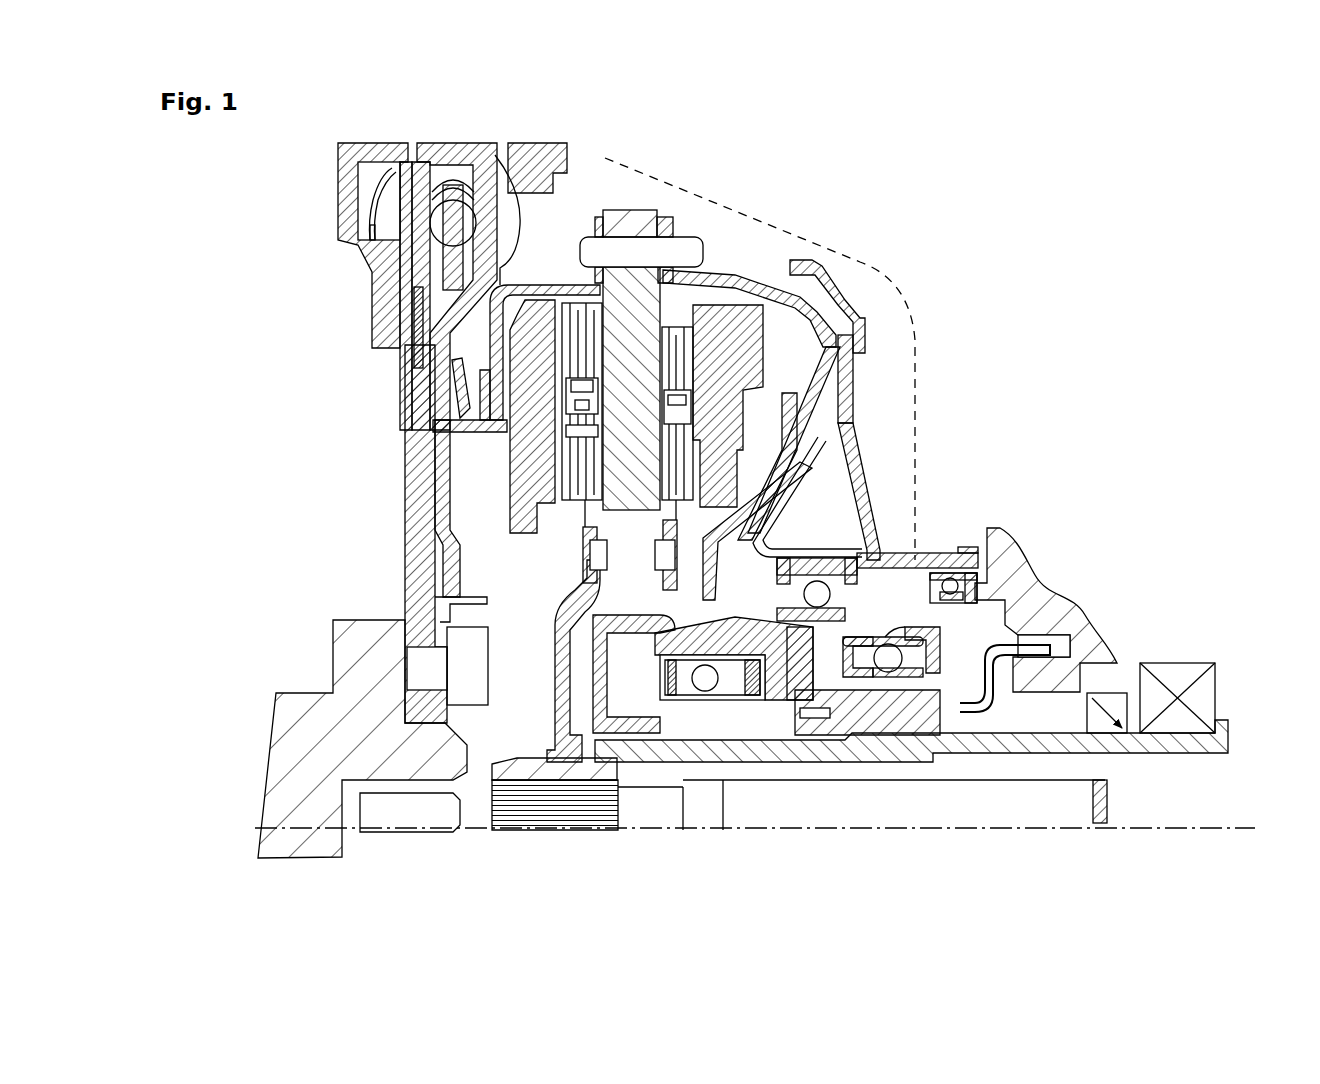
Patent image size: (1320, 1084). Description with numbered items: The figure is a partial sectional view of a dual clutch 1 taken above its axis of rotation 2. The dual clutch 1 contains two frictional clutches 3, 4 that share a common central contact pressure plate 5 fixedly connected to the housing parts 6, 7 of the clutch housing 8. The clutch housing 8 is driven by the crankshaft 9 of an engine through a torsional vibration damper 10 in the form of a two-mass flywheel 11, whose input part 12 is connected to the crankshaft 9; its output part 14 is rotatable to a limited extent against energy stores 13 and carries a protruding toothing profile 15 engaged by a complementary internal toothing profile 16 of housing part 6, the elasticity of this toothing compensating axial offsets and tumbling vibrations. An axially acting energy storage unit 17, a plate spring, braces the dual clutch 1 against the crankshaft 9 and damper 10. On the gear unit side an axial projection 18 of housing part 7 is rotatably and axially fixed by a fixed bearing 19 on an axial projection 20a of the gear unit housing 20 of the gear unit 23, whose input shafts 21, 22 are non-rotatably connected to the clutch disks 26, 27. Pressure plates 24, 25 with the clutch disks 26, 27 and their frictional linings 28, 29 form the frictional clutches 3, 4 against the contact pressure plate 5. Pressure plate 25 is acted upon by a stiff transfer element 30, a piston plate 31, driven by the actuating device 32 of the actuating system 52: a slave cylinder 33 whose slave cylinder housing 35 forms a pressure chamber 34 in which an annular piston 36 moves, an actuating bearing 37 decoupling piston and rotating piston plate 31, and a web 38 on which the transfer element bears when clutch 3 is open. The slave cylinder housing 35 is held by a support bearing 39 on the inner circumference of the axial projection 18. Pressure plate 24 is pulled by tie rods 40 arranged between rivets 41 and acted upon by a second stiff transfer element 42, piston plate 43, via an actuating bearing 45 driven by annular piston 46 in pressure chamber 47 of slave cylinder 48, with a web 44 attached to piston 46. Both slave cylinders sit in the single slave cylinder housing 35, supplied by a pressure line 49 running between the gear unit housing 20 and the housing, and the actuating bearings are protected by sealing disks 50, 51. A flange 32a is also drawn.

The dual clutch 1 is at (1075, 215).
The axis of rotation 2 is at (428, 830).
The frictional clutch 3 is at (565, 250).
The frictional clutch 4 is at (720, 255).
The contact pressure plate 5 is at (637, 220).
The housing part 6 is at (530, 320).
The housing part 7 is at (820, 280).
The clutch housing 8 is at (778, 258).
The crankshaft 9 is at (358, 640).
The torsional vibration damper 10 is at (575, 108).
The two-mass flywheel 11 is at (480, 125).
The input part 12 is at (418, 470).
The energy stores 13 is at (395, 268).
The output part 14 is at (442, 375).
The toothing profile 15 is at (452, 427).
The toothing profile 16 is at (483, 413).
The energy storage unit 17 is at (455, 395).
The axial projection 18 is at (880, 600).
The fixed bearing 19 is at (958, 610).
The gear unit housing 20 is at (1075, 600).
The axial projection 20a is at (1000, 645).
The gear unit input shaft 21 is at (975, 805).
The gear unit input shaft 22 is at (1040, 750).
The gear unit 23 is at (1095, 545).
The pressure plate 24 is at (562, 255).
The pressure plate 25 is at (745, 290).
The clutch disk 26 is at (580, 575).
The clutch disk 27 is at (665, 575).
The frictional linings 28 is at (550, 470).
The frictional linings 29 is at (700, 455).
The transfer element 30 is at (847, 380).
The piston plate 31 is at (833, 427).
The actuating device 32 is at (750, 638).
The flange 32a is at (883, 560).
The slave cylinder 33 is at (770, 715).
The pressure chamber 34 is at (770, 670).
The slave cylinder housing 35 is at (795, 700).
The annular piston 36 is at (695, 735).
The actuating bearing 37 is at (680, 663).
The web 38 is at (670, 565).
The support bearing 39 is at (820, 575).
The tie rods 40 is at (838, 320).
The rivets 41 is at (680, 246).
The transfer element 42 is at (870, 457).
The piston plate 43 is at (835, 370).
The web 44 is at (780, 730).
The actuating bearing 45 is at (1045, 753).
The annular piston 46 is at (880, 720).
The pressure chamber 47 is at (845, 735).
The slave cylinder 48 is at (945, 585).
The pressure line 49 is at (985, 705).
The sealing disk 50 is at (710, 700).
The sealing disk 51 is at (875, 710).
The actuating system 52 is at (880, 565).